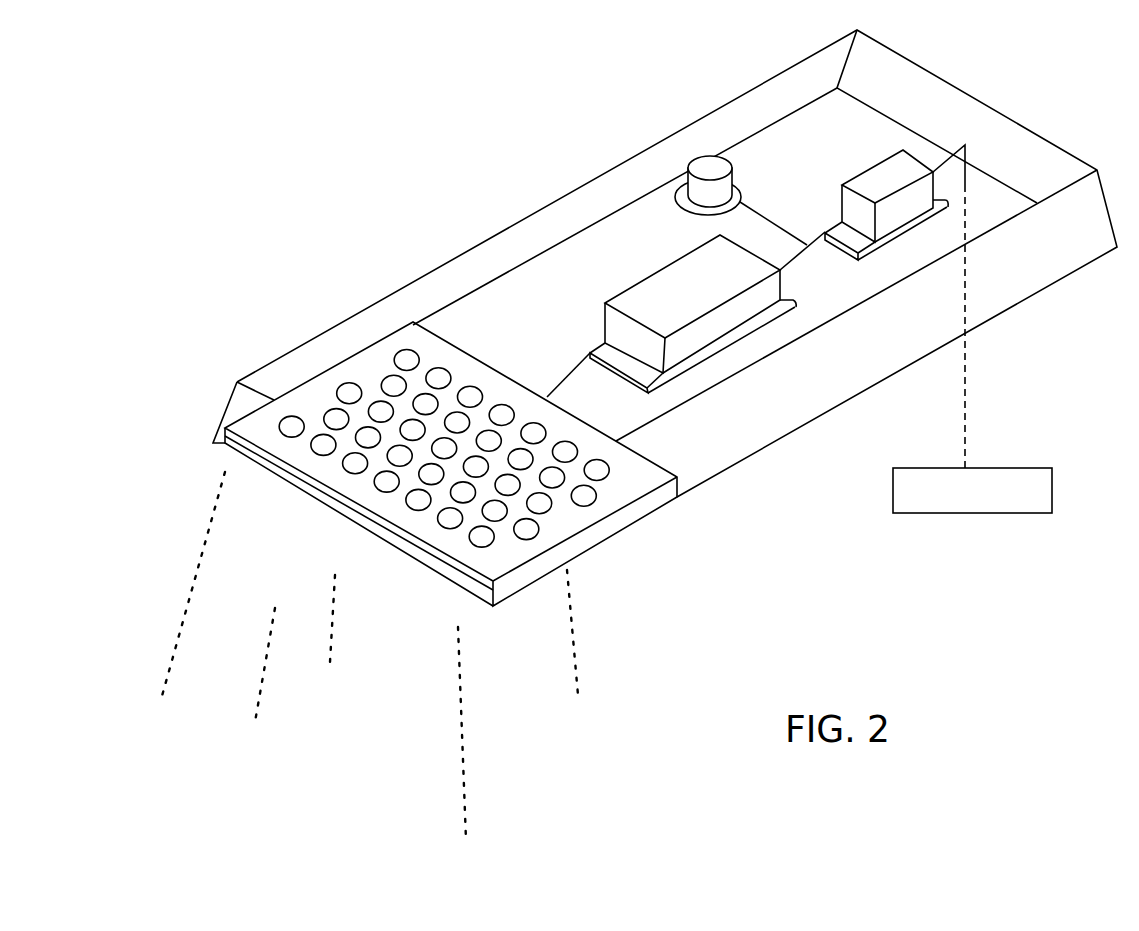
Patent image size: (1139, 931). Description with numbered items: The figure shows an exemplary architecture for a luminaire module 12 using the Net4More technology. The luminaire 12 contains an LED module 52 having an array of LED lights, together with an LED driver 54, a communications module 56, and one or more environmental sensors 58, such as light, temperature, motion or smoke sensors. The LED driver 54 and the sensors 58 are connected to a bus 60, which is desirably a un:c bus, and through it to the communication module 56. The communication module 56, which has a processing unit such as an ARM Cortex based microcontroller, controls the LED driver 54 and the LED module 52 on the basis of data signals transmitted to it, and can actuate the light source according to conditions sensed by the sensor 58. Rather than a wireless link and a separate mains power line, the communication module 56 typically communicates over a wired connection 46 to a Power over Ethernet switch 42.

The luminaire module 12 is at (907, 77).
The Power over Ethernet (PoE) switch 42 is at (1017, 477).
The connection 46 is at (940, 193).
The LED module 52 is at (450, 547).
The LED driver 54 is at (728, 333).
The communication module 56 is at (908, 217).
The environmental sensors 58 is at (708, 170).
The bus 60 is at (793, 263).